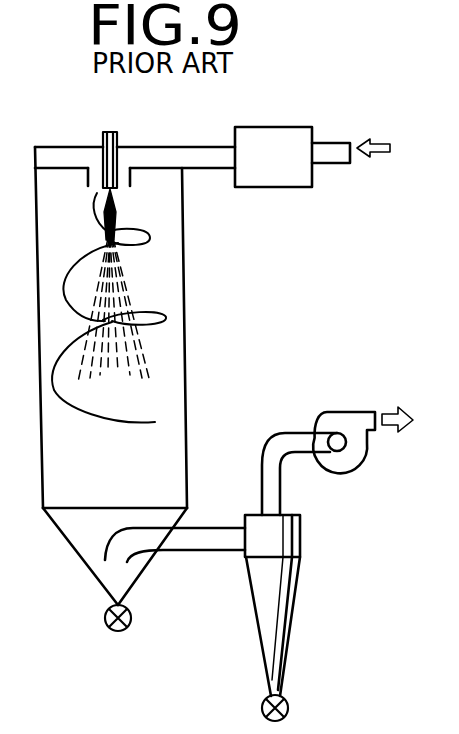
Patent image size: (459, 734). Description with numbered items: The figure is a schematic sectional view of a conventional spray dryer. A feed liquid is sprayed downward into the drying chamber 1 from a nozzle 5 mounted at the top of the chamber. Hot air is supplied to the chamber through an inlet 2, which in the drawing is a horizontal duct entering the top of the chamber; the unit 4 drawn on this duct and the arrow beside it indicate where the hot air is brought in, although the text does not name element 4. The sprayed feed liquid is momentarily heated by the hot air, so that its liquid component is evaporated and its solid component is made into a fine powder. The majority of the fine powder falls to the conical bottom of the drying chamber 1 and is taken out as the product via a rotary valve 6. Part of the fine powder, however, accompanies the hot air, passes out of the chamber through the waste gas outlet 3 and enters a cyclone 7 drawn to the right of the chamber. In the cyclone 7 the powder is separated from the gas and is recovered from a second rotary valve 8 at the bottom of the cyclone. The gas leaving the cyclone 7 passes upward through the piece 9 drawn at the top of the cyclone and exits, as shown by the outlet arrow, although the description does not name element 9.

The drying chamber 1 is at (185, 355).
The inlet 2 is at (208, 160).
The waste gas outlet 3 is at (208, 542).
The air heater 4 is at (287, 134).
The nozzle 5 is at (103, 140).
The rotary valve 6 is at (105, 620).
The cyclone 7 is at (298, 582).
The rotary valve 8 is at (289, 706).
The exhaust blower 9 is at (366, 447).